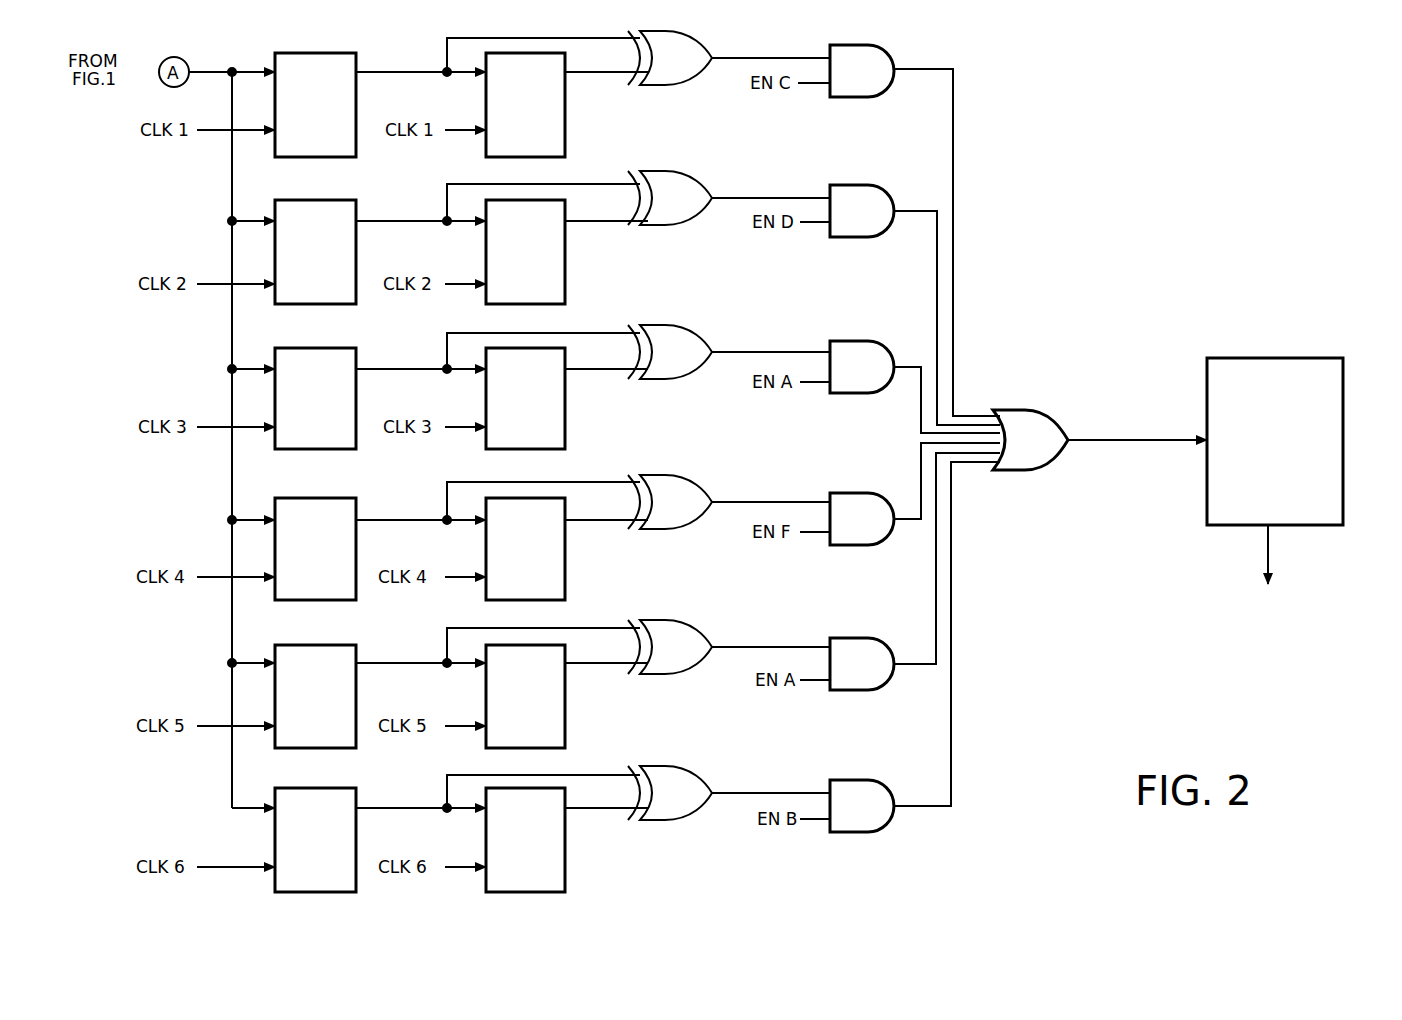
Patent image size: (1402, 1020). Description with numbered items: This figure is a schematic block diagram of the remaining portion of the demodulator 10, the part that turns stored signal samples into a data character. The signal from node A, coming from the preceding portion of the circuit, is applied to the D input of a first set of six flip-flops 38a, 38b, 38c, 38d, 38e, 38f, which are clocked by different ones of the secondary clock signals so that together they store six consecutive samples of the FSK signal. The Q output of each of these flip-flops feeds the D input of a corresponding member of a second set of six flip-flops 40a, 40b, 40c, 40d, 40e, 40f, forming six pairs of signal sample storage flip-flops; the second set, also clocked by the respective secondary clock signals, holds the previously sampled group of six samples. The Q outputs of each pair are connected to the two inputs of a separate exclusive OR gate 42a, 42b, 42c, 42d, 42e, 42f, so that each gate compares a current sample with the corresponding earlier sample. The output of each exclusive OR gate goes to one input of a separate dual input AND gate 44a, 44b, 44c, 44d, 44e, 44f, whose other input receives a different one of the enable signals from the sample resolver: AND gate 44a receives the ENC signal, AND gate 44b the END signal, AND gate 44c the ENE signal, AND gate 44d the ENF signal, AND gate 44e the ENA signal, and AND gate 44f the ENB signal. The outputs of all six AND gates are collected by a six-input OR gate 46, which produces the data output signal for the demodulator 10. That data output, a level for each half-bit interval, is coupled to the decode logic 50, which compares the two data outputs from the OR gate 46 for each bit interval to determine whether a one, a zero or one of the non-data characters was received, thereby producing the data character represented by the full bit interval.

The demodulator 10 is at (985, 674).
The first set flip-flop 38a is at (340, 150).
The first set flip-flop 38b is at (340, 297).
The first set flip-flop 38c is at (340, 442).
The first set flip-flop 38d is at (340, 593).
The first set flip-flop 38e is at (340, 740).
The first set flip-flop 38f is at (338, 882).
The second set flip-flop 40a is at (540, 126).
The second set flip-flop 40b is at (540, 280).
The second set flip-flop 40c is at (540, 423).
The second set flip-flop 40d is at (540, 573).
The second set flip-flop 40e is at (540, 722).
The second set flip-flop 40f is at (540, 863).
The exclusive OR gate 42a is at (665, 78).
The exclusive OR gate 42b is at (665, 218).
The exclusive OR gate 42c is at (665, 372).
The exclusive OR gate 42d is at (665, 522).
The exclusive OR gate 42e is at (665, 667).
The exclusive OR gate 42f is at (665, 813).
The dual input AND gate 44a is at (876, 90).
The dual input AND gate 44b is at (876, 230).
The dual input AND gate 44c is at (876, 386).
The dual input AND gate 44d is at (876, 538).
The dual input AND gate 44e is at (876, 683).
The dual input AND gate 44f is at (876, 825).
The six-input OR gate 46 is at (1048, 457).
The decode logic 50 is at (1248, 512).